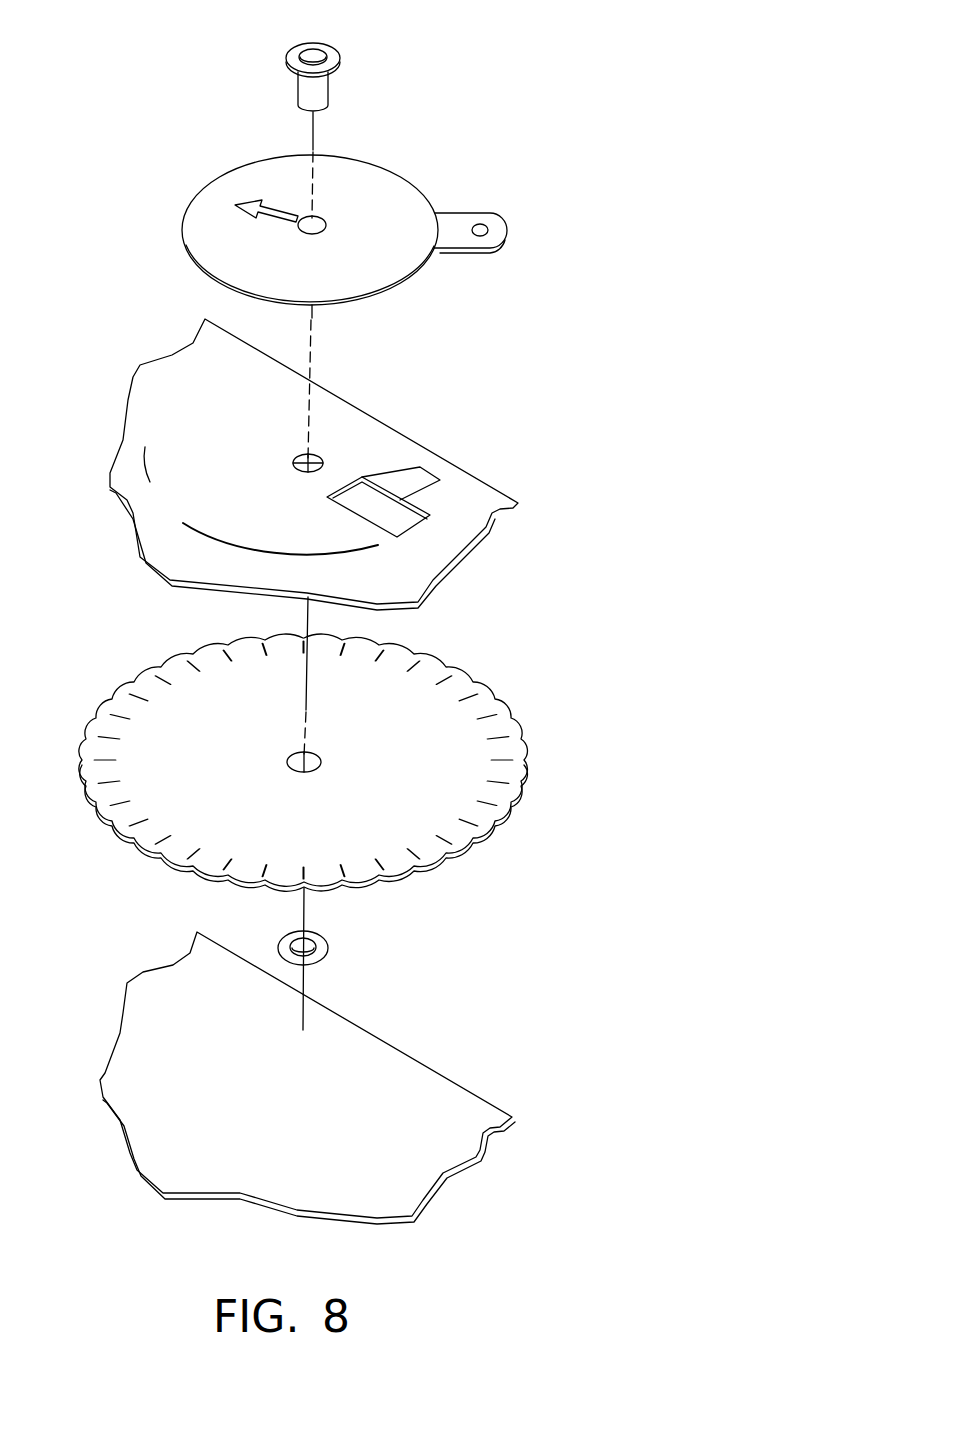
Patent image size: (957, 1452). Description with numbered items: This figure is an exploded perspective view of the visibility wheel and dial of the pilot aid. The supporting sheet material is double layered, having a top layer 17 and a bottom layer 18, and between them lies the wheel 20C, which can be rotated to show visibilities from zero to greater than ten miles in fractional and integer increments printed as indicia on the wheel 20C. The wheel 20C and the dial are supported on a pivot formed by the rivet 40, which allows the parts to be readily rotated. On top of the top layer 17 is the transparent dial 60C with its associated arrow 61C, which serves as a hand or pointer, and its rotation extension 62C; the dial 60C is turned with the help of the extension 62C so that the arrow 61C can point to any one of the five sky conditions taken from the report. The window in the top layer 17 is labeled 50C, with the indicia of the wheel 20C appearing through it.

The rivet 40 is at (334, 52).
The transparent dial 60C is at (363, 177).
The arrow 61C is at (253, 203).
The rotation extension 62C is at (488, 213).
The top layer 17 is at (465, 482).
The window 50C is at (432, 515).
The wheel 20C is at (483, 705).
The bottom layer 18 is at (411, 1109).